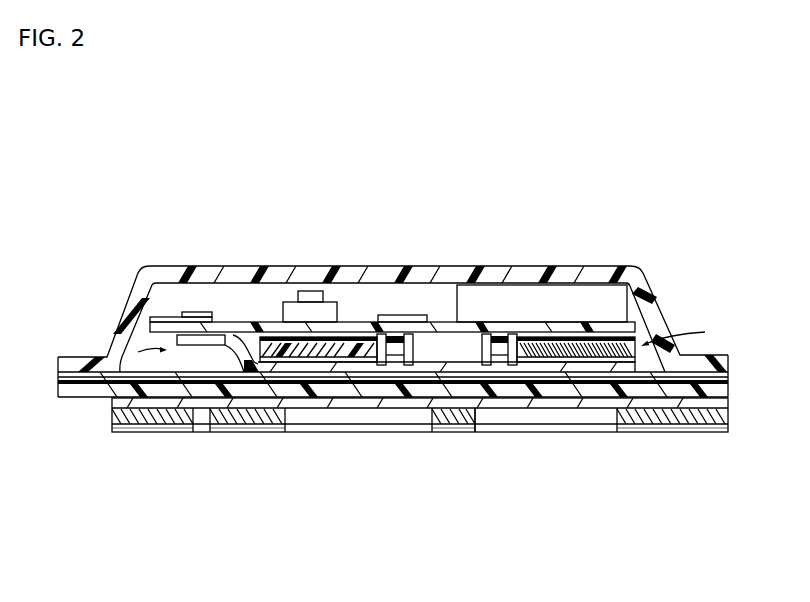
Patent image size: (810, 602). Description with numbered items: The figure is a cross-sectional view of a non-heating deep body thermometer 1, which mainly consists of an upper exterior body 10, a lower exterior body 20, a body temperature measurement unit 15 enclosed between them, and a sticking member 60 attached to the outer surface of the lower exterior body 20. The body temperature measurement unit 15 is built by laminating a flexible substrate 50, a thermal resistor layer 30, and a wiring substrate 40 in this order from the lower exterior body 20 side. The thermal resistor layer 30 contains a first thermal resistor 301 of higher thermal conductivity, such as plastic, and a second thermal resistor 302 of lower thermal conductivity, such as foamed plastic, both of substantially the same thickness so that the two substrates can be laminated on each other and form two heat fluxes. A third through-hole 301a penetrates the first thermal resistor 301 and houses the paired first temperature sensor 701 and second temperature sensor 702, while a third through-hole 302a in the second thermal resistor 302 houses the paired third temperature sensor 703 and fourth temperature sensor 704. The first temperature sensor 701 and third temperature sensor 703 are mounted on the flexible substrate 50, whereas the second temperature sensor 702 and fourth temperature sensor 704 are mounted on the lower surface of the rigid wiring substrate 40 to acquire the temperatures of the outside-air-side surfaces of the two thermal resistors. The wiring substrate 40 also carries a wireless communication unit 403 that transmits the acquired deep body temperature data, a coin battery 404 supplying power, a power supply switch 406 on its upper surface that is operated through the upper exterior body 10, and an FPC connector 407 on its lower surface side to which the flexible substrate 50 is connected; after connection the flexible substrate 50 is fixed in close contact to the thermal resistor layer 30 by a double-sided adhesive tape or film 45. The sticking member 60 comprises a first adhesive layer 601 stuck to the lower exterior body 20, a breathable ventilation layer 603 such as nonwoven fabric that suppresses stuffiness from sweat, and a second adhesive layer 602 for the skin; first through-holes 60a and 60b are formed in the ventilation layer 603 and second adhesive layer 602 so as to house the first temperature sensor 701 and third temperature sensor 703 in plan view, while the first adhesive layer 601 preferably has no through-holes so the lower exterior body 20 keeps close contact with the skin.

The deep body thermometer 1 is at (603, 209).
The upper exterior body 10 is at (147, 270).
The body temperature measurement unit 15 is at (112, 371).
The lower exterior body 20 is at (78, 397).
The thermal resistor layer 30 is at (661, 355).
The wiring substrate 40 is at (353, 323).
The double-sided adhesive tape or film 45 is at (687, 332).
The flexible substrate 50 is at (362, 367).
The sticking member 60 is at (247, 527).
The first through-hole 60a is at (298, 420).
The first through-hole 60b is at (602, 421).
The first adhesive layer 601 is at (237, 405).
The second adhesive layer 602 is at (142, 433).
The ventilation layer 603 is at (188, 421).
The first thermal resistor 301 is at (330, 352).
The third through-hole 301a is at (404, 336).
The second thermal resistor 302 is at (553, 359).
The third through-hole 302a is at (511, 343).
The wireless communication unit 403 is at (190, 316).
The coin battery 404 is at (563, 286).
The power supply switch 406 is at (309, 292).
The FPC connector 407 is at (210, 338).
The first temperature sensor 701 is at (398, 363).
The second temperature sensor 702 is at (398, 316).
The third temperature sensor 703 is at (500, 364).
The fourth temperature sensor 704 is at (496, 336).